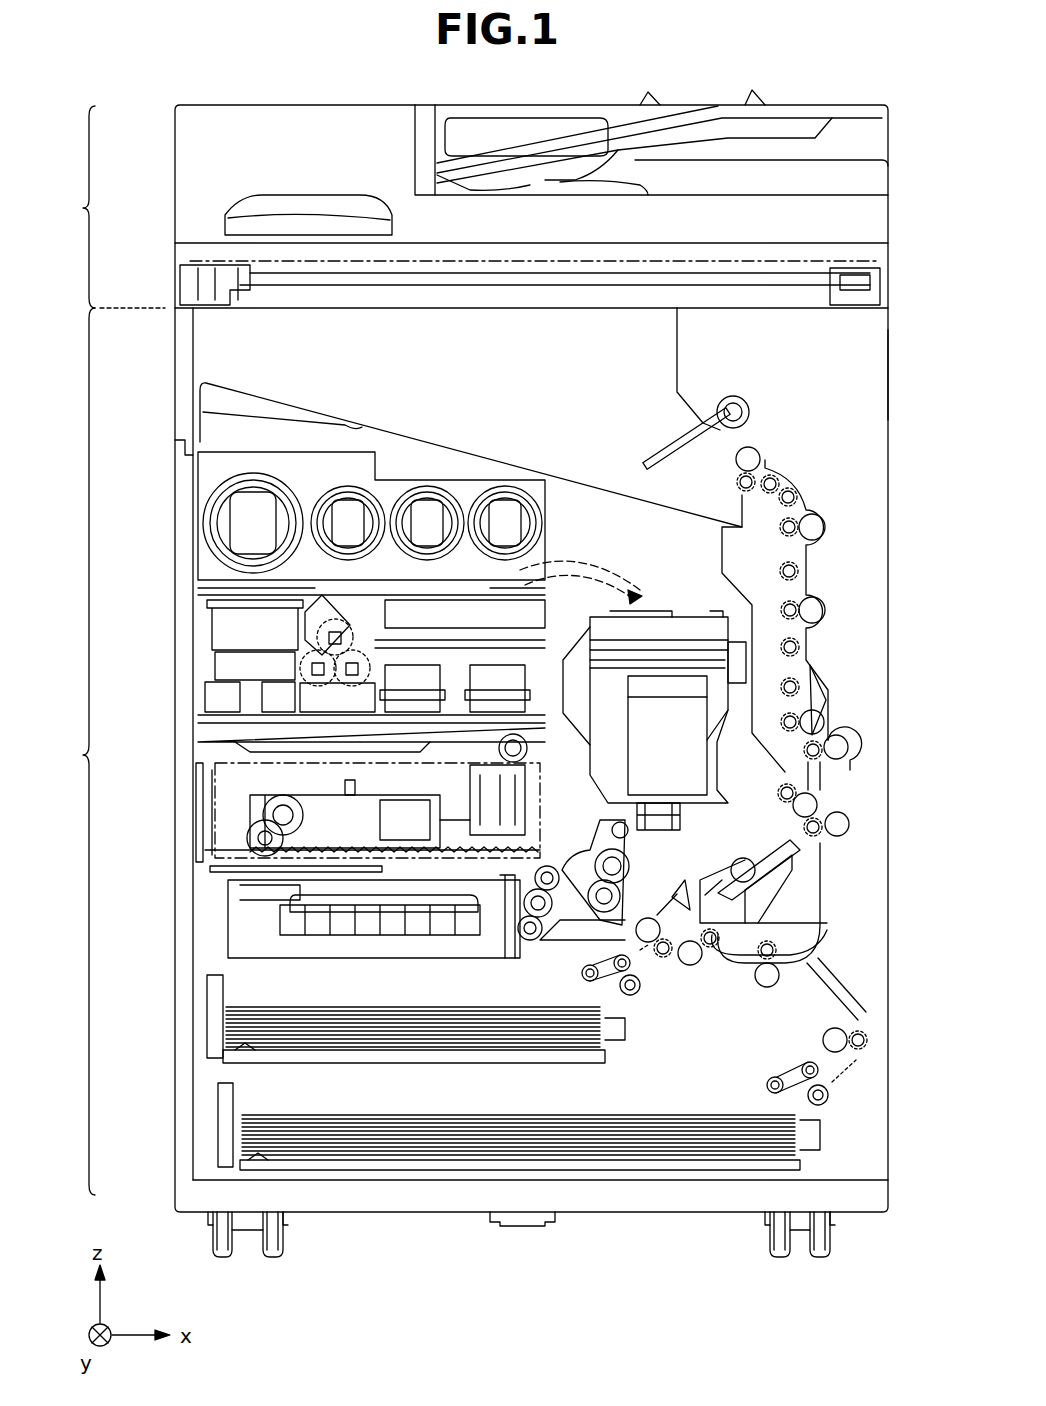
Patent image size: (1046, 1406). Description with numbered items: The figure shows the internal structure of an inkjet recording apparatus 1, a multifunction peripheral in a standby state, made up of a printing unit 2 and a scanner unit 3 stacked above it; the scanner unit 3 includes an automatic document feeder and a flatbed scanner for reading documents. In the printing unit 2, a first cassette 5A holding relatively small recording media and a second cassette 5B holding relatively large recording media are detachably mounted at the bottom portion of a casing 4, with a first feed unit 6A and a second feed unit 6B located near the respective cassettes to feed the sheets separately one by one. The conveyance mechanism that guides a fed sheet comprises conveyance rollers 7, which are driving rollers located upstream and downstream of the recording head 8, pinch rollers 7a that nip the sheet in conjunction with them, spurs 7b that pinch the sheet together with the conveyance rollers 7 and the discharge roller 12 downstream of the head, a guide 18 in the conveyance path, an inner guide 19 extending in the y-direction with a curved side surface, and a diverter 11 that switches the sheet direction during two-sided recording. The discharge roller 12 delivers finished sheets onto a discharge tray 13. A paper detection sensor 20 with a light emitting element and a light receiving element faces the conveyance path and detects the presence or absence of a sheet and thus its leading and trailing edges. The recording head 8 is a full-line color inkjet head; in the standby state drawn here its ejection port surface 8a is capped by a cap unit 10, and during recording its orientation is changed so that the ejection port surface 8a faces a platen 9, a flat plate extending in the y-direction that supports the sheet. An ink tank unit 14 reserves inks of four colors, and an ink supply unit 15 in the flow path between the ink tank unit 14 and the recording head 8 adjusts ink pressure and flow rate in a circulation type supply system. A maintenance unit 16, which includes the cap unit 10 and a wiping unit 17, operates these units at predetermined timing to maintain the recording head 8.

The recording apparatus 1 is at (830, 88).
The printing unit 2 is at (472, 782).
The scanner unit 3 is at (472, 199).
The casing 4 is at (890, 373).
The first cassette 5A is at (210, 1020).
The second cassette 5B is at (218, 1135).
The first feed unit 6A is at (637, 995).
The second feed unit 6B is at (828, 1098).
The conveyance rollers 7 is at (848, 826).
The pinch rollers 7a is at (707, 960).
The spurs 7b is at (800, 640).
The recording head 8 is at (693, 753).
The ejection port surface 8a is at (685, 820).
The platen 9 is at (845, 838).
The cap unit 10 is at (693, 847).
The diverter 11 is at (815, 690).
The discharge roller 12 is at (753, 443).
The discharge tray 13 is at (465, 452).
The ink tank unit 14 is at (205, 497).
The ink supply unit 15 is at (203, 665).
The maintenance unit 16 is at (225, 928).
The wiping unit 17 is at (215, 790).
The guide 18 is at (808, 563).
The inner guide 19 is at (800, 905).
The paper detection sensor 20 is at (805, 945).